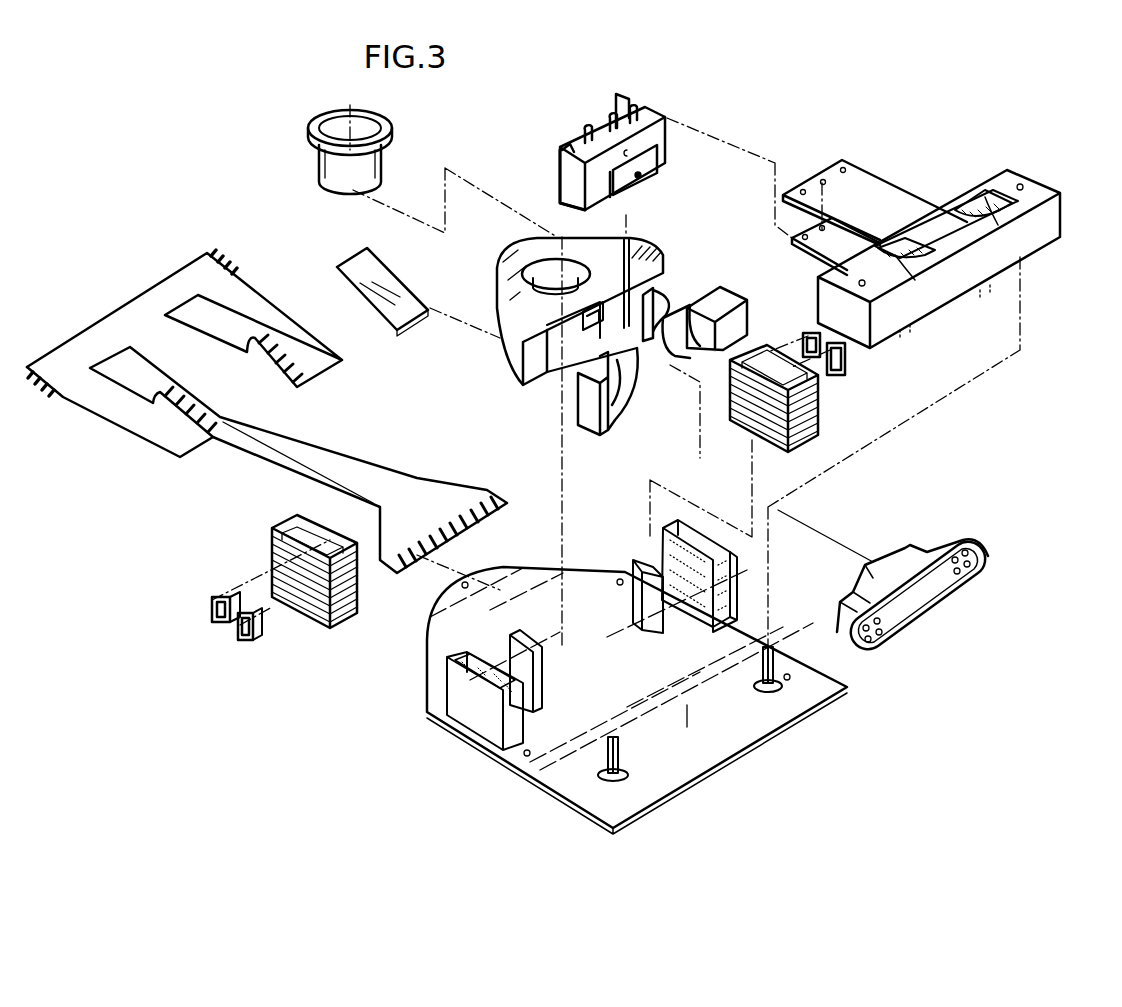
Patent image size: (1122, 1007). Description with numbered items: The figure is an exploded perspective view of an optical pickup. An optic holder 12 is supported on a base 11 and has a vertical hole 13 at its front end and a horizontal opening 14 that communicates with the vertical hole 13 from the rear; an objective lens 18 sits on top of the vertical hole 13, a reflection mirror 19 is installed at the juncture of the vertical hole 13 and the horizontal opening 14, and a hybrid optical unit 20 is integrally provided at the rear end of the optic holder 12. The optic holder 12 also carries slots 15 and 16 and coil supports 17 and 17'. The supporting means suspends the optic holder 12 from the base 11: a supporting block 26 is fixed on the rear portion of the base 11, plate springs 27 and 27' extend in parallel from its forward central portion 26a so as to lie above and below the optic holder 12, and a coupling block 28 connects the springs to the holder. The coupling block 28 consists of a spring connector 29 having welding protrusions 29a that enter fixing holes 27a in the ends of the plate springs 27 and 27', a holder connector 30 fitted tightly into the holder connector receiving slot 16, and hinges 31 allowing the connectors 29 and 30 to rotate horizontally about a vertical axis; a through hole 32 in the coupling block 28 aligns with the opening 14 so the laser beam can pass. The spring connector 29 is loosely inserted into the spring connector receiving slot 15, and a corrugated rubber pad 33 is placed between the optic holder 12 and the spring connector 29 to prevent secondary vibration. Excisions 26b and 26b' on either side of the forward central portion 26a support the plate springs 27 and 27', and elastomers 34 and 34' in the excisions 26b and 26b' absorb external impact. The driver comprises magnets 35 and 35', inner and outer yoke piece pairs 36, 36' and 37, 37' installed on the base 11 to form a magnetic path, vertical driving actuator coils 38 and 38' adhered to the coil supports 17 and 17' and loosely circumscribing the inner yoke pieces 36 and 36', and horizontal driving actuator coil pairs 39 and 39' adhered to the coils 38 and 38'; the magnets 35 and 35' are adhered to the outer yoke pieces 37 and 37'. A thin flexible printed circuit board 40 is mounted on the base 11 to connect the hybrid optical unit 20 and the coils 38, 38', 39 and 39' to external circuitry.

The base 11 is at (790, 722).
The optic holder 12 is at (500, 243).
The vertical hole 13 is at (552, 240).
The horizontal opening 14 is at (605, 292).
The spring connector receiving slot 15 is at (660, 270).
The holder connector receiving slot 16 is at (700, 302).
The coil support 17 is at (576, 397).
The coil support 17' is at (720, 307).
The objective lens 18 is at (318, 147).
The reflection mirror 19 is at (353, 258).
The hybrid optical unit 20 is at (907, 545).
The supporting block 26 is at (940, 303).
The forward central portion 26a is at (933, 220).
The excision 26b is at (943, 287).
The excision 26b' is at (1023, 241).
The plate spring 27 is at (875, 190).
The plate spring 27' is at (830, 259).
The fixing holes 27a is at (843, 170).
The coupling block 28 is at (667, 118).
The spring connector 29 is at (562, 177).
The welding protrusions 29a is at (612, 118).
The holder connector 30 is at (660, 158).
The hinges 31 is at (667, 120).
The through hole 32 is at (642, 178).
The corrugated rubber pad 33 is at (565, 148).
The elastomer 34 is at (919, 310).
The elastomer 34' is at (1012, 177).
The magnet 35 is at (443, 659).
The magnet 35' is at (737, 573).
The inner yoke piece 36 is at (558, 671).
The inner yoke piece 36' is at (631, 567).
The outer yoke piece 37 is at (446, 701).
The outer yoke piece 37' is at (762, 581).
The actuator coil 38 is at (314, 594).
The actuator coil 38' is at (738, 398).
The actuator coil pair 39 is at (217, 643).
The actuator coil pair 39' is at (833, 376).
The flexible printed circuit board 40 is at (253, 435).